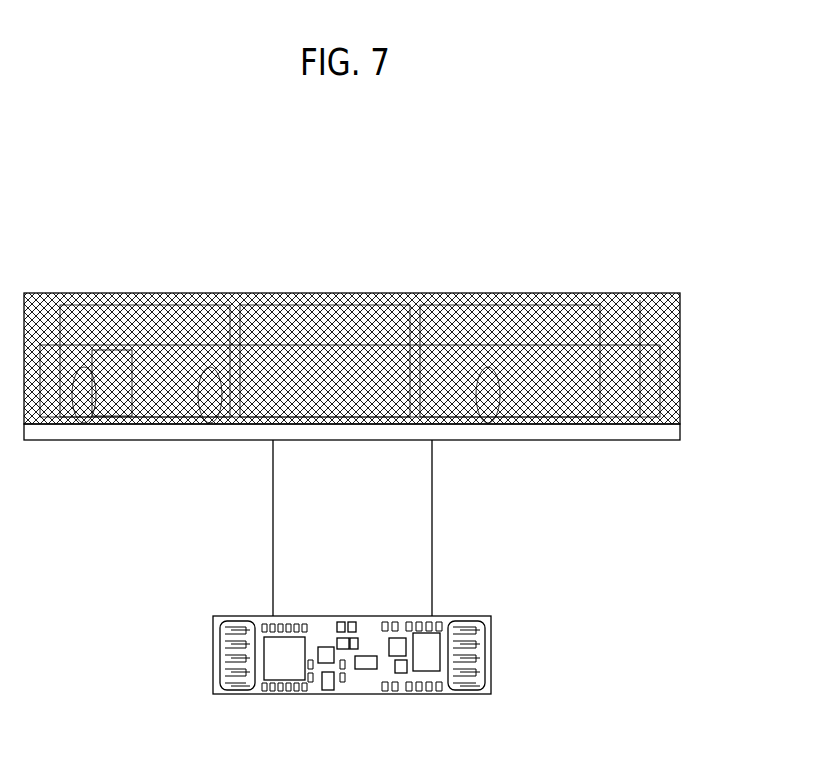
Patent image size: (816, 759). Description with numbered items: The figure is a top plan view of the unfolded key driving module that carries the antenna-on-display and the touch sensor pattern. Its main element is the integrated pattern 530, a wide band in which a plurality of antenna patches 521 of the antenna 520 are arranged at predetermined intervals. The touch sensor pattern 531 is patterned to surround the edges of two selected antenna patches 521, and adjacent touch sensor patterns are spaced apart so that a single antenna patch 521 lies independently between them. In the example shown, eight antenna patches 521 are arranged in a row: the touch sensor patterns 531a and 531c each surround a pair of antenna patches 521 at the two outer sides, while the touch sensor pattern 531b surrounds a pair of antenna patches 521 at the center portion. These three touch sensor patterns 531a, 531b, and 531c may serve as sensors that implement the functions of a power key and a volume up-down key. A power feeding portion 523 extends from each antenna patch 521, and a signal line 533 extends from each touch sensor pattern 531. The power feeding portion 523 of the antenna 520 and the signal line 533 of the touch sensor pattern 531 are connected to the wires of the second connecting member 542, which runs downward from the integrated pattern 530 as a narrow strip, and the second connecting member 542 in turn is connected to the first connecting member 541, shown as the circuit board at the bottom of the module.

The antenna 520 is at (108, 486).
The antenna patch 521 is at (90, 358).
The power feeding portion 523 is at (99, 408).
The integrated pattern 530 is at (573, 274).
The touch sensor pattern 531 is at (330, 287).
The touch sensor pattern 531a is at (510, 308).
The touch sensor pattern 531b is at (300, 300).
The touch sensor pattern 531c is at (183, 294).
The signal line 533 is at (668, 384).
The first connecting member 541 is at (213, 655).
The second connecting member 542 is at (273, 526).